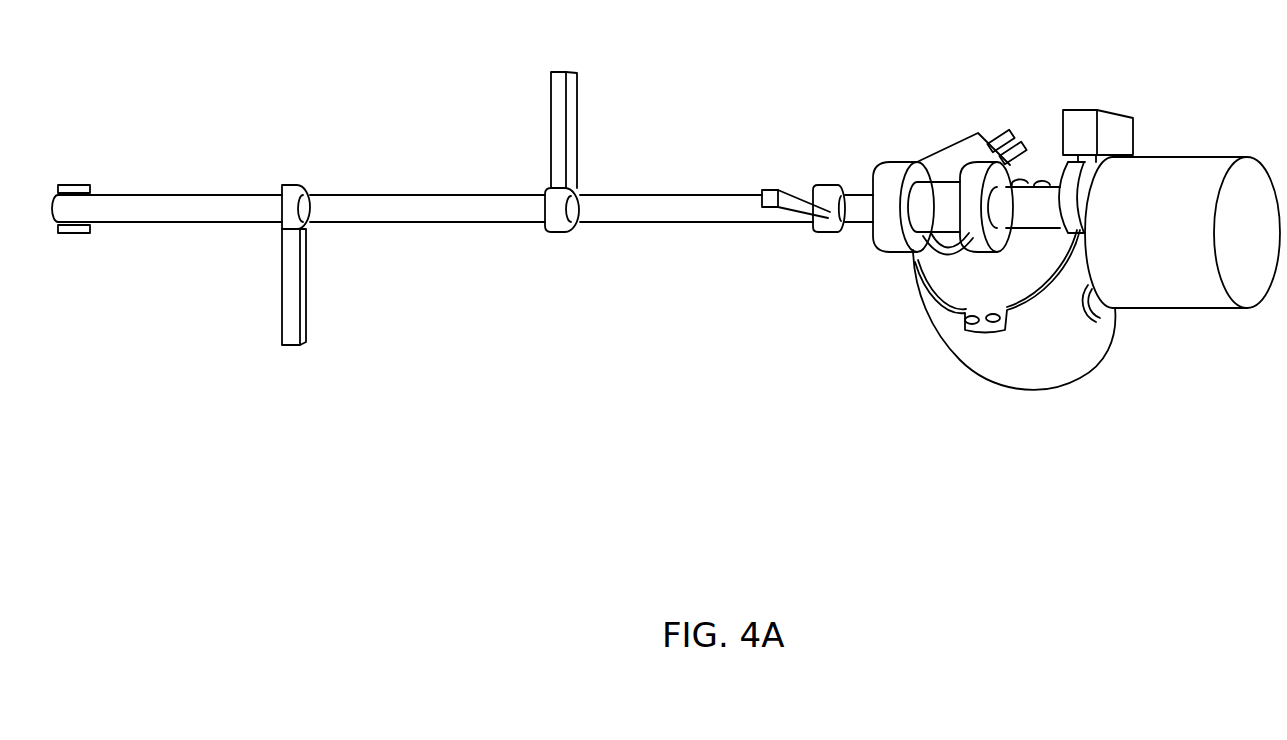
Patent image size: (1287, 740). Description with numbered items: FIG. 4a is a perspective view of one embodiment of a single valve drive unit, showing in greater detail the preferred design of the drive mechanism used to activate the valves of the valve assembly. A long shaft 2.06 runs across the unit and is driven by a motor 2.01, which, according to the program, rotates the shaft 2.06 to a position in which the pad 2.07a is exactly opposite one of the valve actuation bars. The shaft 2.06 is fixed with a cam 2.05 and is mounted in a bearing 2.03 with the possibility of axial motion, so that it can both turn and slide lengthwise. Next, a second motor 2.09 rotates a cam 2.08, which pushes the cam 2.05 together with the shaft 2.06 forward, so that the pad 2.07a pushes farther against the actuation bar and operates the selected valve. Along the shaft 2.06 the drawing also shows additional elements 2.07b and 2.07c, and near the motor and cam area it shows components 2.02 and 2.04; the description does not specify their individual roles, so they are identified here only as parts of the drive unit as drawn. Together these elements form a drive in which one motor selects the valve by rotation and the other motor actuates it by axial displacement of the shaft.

The motor 2.01 is at (1153, 303).
The connector block 2.02 is at (1128, 120).
The bearing 2.03 is at (83, 187).
The sensor unit 2.04 is at (960, 142).
The cam 2.05 is at (882, 248).
The shaft 2.06 is at (668, 218).
The pad 2.07a is at (785, 193).
The clamp 2.07b is at (553, 102).
The clamp 2.07c is at (287, 332).
The cam 2.08 is at (947, 253).
The motor 2.09 is at (983, 383).